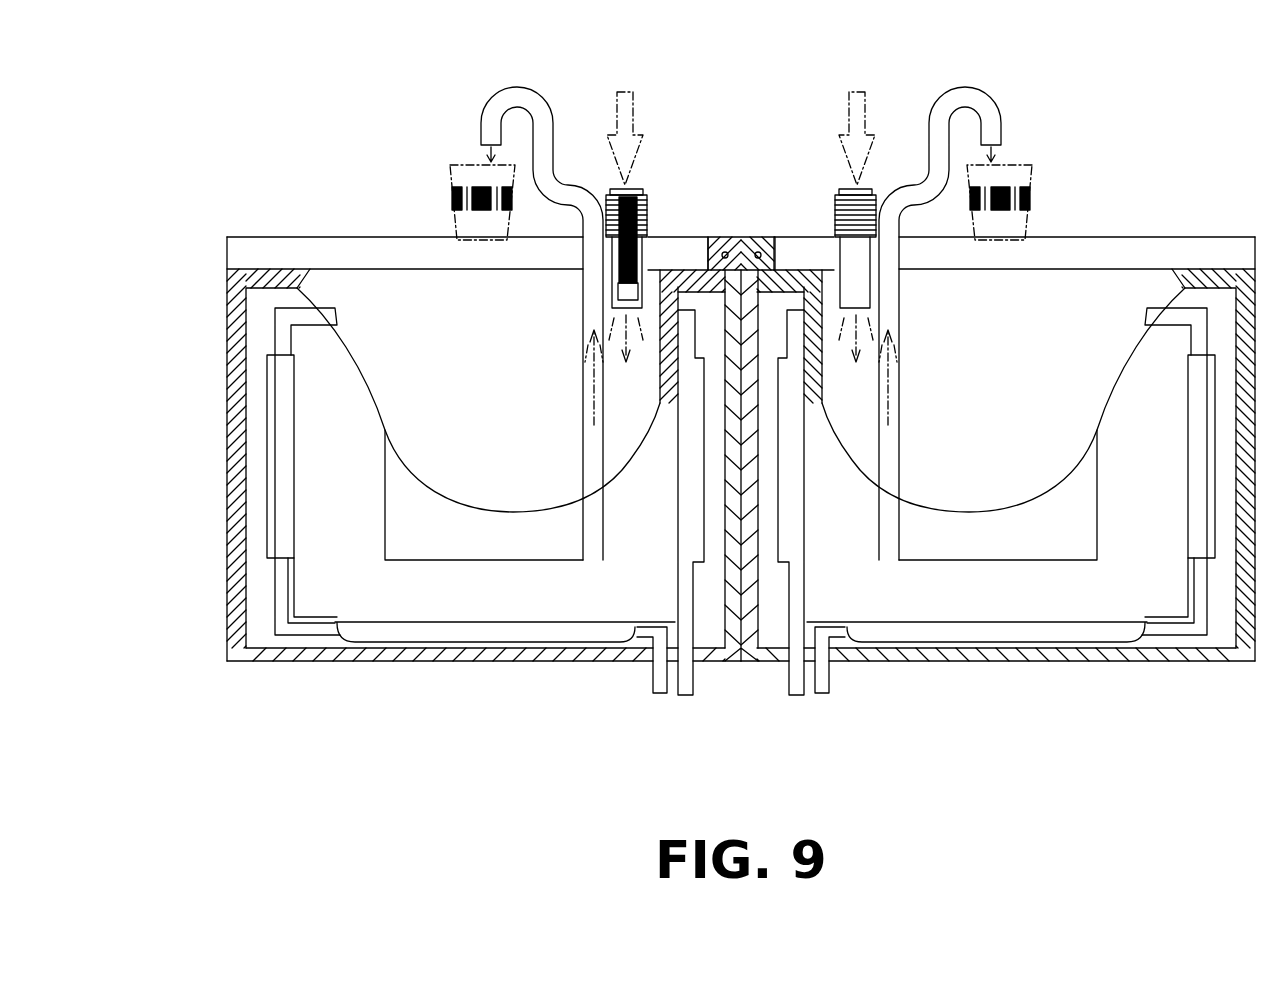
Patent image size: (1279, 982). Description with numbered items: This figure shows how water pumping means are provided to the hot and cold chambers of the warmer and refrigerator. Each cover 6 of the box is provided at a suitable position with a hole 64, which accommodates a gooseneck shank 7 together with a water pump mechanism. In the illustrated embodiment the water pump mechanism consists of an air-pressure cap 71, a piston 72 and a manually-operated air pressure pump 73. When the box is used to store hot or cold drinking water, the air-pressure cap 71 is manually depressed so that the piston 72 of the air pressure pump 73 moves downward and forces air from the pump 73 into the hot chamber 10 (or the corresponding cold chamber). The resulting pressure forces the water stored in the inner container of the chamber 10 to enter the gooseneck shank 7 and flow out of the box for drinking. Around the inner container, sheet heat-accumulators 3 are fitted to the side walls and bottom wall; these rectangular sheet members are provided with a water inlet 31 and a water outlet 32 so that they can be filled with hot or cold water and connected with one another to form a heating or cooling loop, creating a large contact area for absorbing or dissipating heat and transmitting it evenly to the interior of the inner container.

The sheet heat-accumulator 3 is at (285, 472).
The cover 6 is at (272, 250).
The gooseneck shank 7 is at (516, 100).
The hot chamber 10 is at (373, 296).
The water inlet 31 is at (690, 697).
The water outlet 32 is at (657, 697).
The hole 64 is at (657, 240).
The air-pressure cap 71 is at (634, 188).
The piston 72 is at (613, 290).
The manually-operated air pressure pump 73 is at (650, 230).